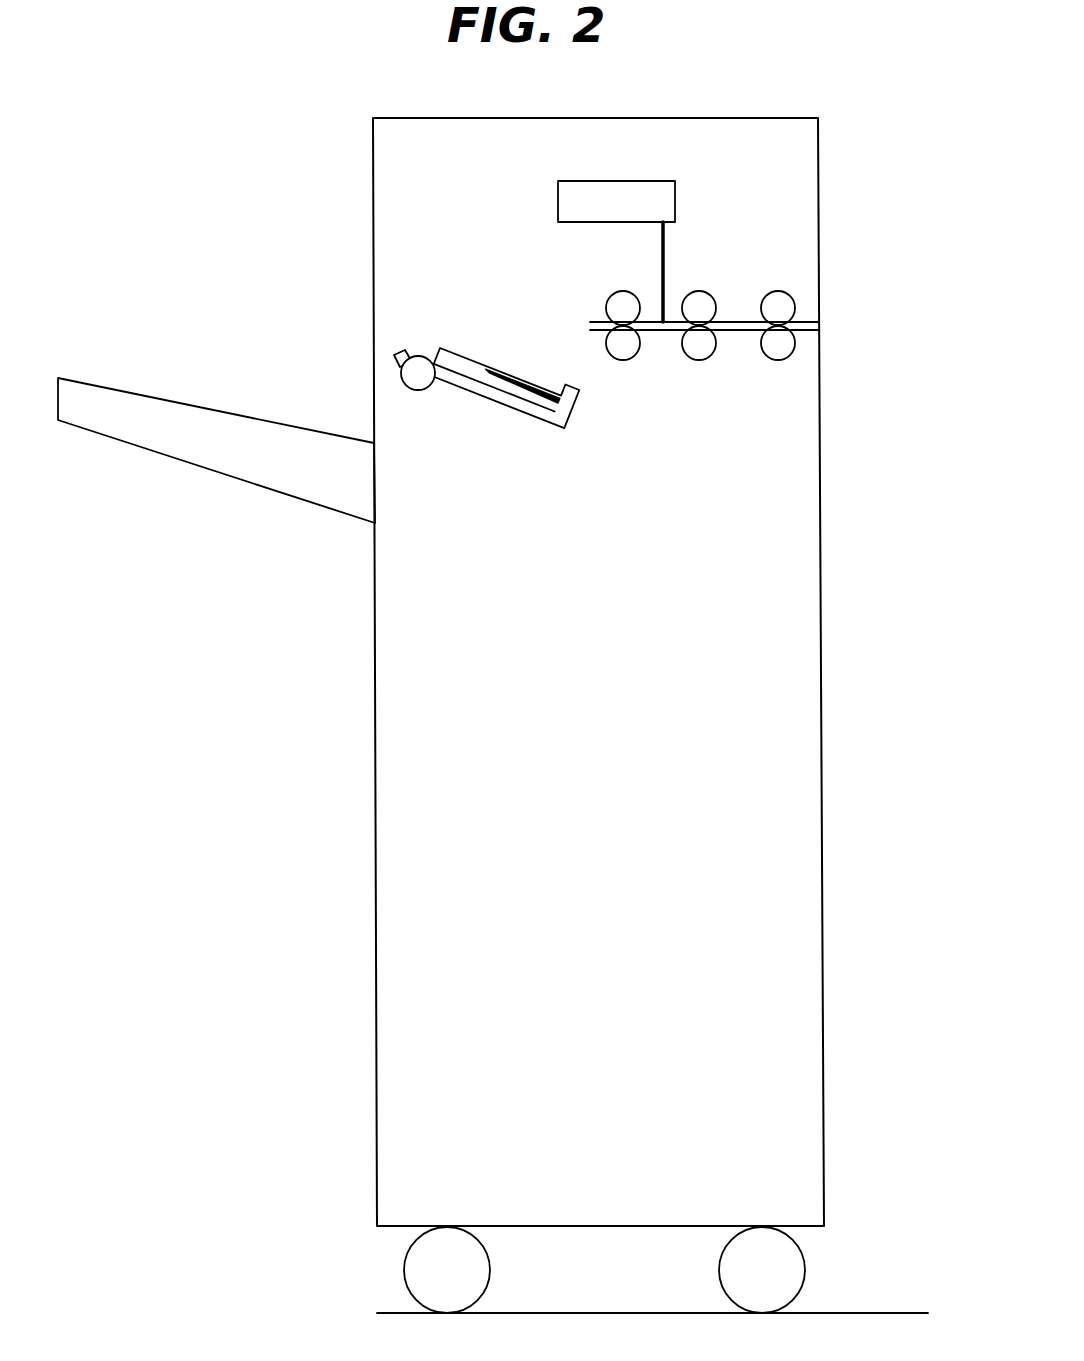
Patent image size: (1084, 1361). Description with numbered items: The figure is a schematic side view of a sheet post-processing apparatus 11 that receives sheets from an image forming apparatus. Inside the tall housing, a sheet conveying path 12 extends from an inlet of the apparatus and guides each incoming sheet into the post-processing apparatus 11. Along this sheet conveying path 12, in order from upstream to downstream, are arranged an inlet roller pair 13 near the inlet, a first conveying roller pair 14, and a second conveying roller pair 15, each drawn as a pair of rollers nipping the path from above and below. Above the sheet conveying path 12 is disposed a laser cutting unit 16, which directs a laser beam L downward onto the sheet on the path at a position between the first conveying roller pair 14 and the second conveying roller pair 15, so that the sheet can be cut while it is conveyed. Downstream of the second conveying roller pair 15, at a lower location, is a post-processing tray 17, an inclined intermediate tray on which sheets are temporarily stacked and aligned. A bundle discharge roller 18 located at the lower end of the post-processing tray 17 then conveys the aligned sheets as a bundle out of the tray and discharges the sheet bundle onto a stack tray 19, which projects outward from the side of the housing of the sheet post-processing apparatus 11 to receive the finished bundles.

The sheet post-processing apparatus 11 is at (830, 556).
The sheet conveying path 12 is at (749, 320).
The inlet roller pair 13 is at (780, 292).
The first conveying roller pair 14 is at (703, 360).
The second conveying roller pair 15 is at (625, 360).
The laser cutting unit 16 is at (675, 192).
The laser beam L is at (665, 230).
The post-processing tray 17 is at (532, 422).
The bundle discharge roller 18 is at (418, 390).
The stack tray 19 is at (287, 495).